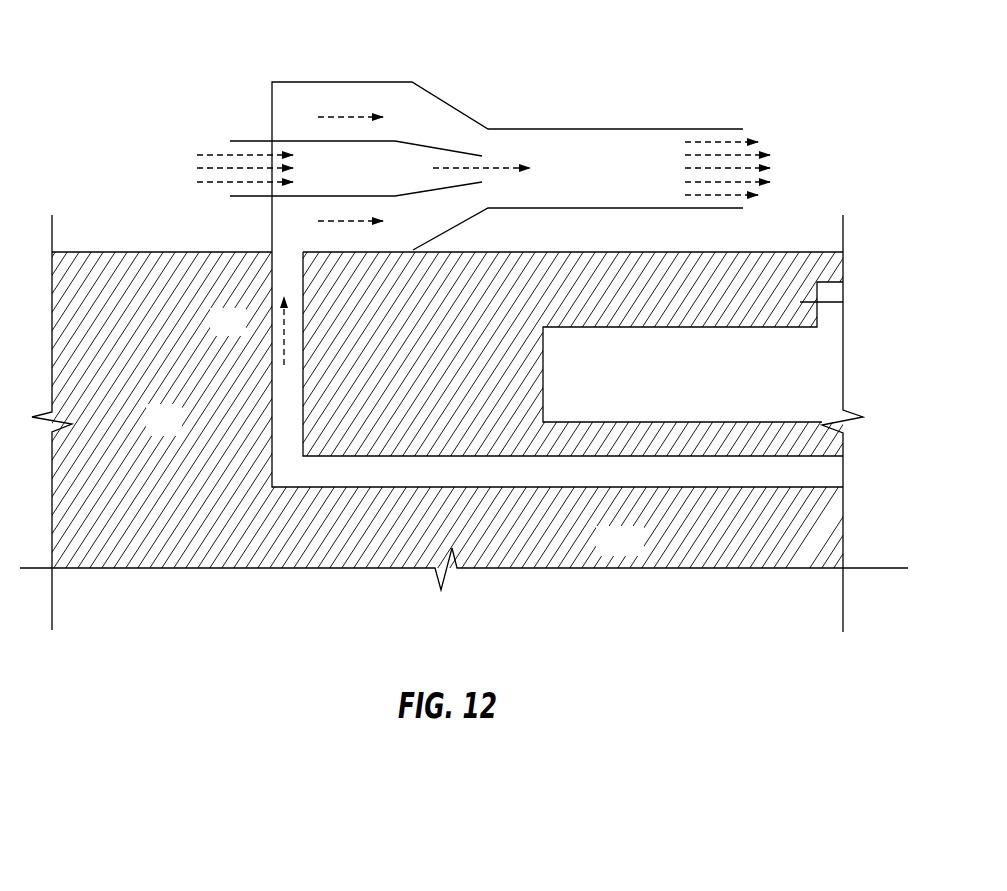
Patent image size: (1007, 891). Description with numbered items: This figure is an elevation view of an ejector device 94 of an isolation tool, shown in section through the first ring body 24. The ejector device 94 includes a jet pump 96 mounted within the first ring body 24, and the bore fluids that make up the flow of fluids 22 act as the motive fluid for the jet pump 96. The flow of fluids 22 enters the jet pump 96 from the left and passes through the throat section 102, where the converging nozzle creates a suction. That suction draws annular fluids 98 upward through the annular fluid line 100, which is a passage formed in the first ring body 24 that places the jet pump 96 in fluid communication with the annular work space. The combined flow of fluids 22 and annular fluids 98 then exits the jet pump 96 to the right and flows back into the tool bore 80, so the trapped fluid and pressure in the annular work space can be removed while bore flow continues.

The flow of fluid 22 is at (218, 155).
The first ring body 24 is at (178, 433).
The tool bore 80 is at (822, 136).
The ejector device 94 is at (507, 153).
The jet pump 96 is at (411, 97).
The annular fluids 98 is at (283, 340).
The annular fluid line 100 is at (602, 483).
The throat section 102 is at (497, 133).